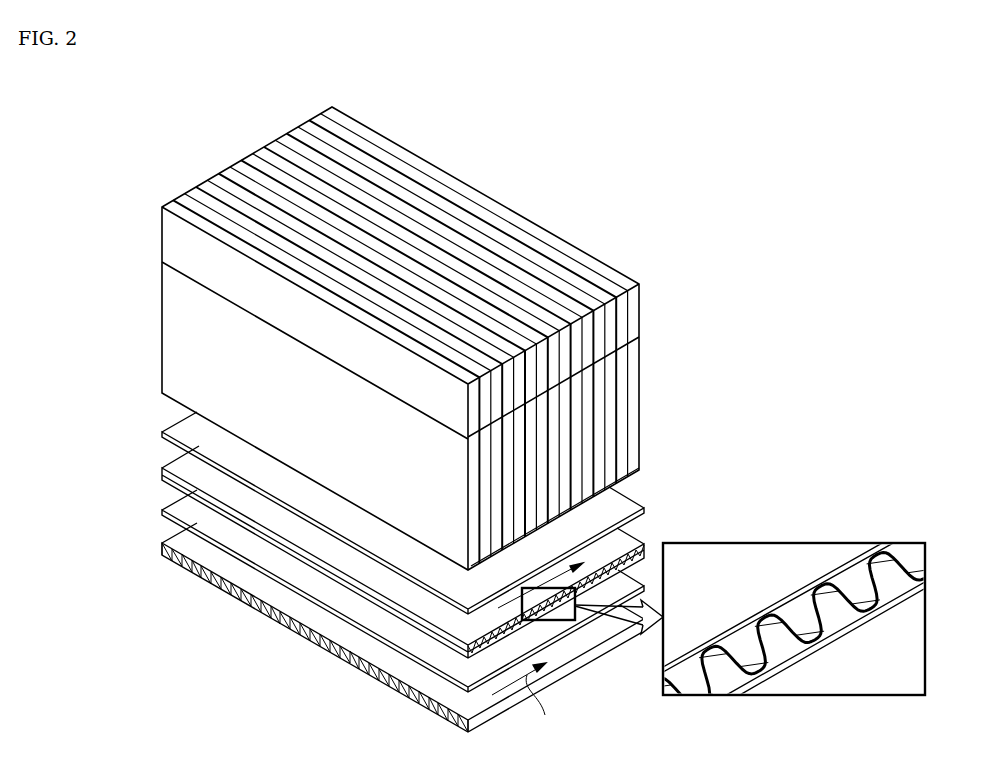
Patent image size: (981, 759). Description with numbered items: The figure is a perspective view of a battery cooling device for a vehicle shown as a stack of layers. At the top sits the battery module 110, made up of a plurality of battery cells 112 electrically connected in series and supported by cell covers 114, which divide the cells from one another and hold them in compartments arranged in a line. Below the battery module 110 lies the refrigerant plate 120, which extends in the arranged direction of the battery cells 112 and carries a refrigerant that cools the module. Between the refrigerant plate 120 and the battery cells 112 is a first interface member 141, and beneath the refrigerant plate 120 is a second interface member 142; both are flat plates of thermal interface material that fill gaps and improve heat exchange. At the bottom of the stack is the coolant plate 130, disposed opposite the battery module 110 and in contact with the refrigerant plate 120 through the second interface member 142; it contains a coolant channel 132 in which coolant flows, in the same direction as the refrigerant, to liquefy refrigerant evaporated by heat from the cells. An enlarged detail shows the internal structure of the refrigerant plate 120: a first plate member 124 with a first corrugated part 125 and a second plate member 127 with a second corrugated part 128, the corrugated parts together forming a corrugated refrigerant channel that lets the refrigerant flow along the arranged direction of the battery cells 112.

The battery module 110 is at (192, 163).
The battery cells 112 is at (242, 182).
The cell covers 114 is at (170, 297).
The refrigerant plate 120 is at (160, 454).
The first plate member 124 is at (808, 568).
The first corrugated part 125 is at (852, 572).
The second plate member 127 is at (812, 633).
The second corrugated part 128 is at (883, 612).
The coolant plate 130 is at (412, 623).
The coolant channel 132 is at (183, 573).
The first interface member 141 is at (170, 427).
The second interface member 142 is at (170, 508).